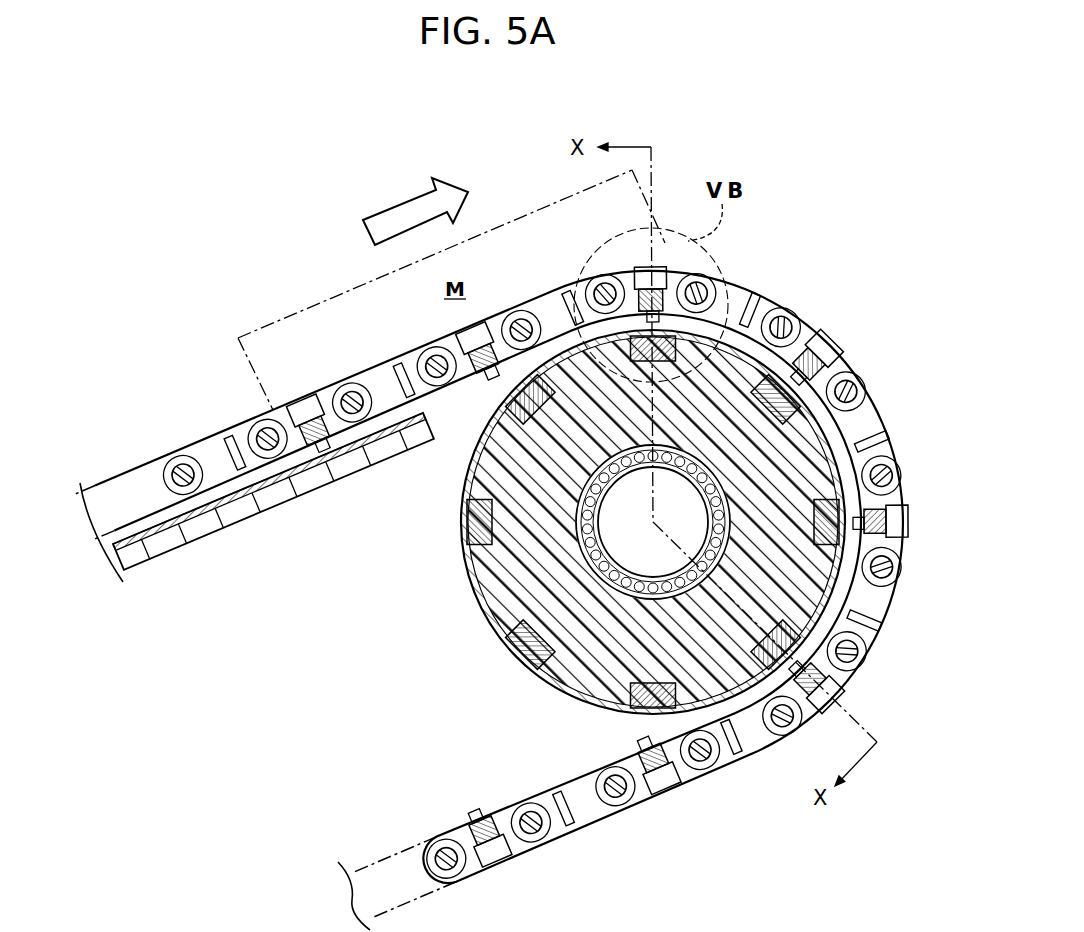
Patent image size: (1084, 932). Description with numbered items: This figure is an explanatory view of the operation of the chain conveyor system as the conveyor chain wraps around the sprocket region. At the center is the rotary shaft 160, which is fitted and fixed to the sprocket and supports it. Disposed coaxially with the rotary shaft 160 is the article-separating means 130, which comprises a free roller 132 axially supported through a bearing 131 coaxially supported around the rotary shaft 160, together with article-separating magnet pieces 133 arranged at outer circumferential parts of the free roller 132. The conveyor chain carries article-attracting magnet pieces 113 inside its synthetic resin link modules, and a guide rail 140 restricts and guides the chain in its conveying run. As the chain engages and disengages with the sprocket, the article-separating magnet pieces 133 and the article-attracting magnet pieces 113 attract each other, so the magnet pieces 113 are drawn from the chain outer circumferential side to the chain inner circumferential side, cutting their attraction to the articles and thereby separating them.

The article-attracting magnet piece 113 is at (297, 398).
The article-separating means 130 is at (585, 522).
The bearing 131 is at (515, 617).
The free roller 132 is at (492, 594).
The article-separating magnet piece 133 is at (465, 537).
The guide rail 140 is at (278, 498).
The rotary shaft 160 is at (657, 559).